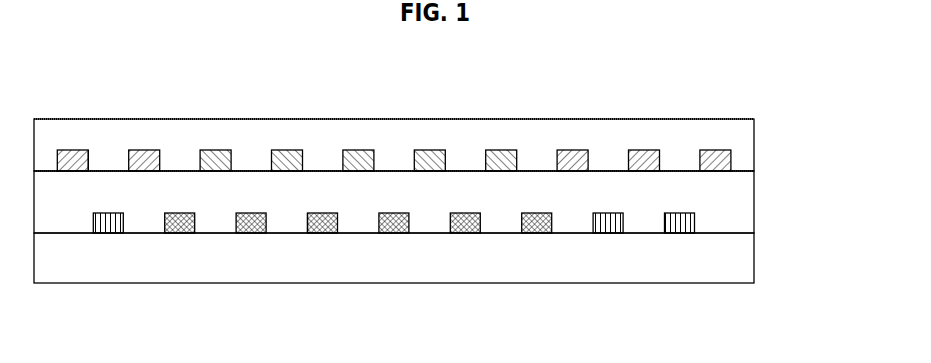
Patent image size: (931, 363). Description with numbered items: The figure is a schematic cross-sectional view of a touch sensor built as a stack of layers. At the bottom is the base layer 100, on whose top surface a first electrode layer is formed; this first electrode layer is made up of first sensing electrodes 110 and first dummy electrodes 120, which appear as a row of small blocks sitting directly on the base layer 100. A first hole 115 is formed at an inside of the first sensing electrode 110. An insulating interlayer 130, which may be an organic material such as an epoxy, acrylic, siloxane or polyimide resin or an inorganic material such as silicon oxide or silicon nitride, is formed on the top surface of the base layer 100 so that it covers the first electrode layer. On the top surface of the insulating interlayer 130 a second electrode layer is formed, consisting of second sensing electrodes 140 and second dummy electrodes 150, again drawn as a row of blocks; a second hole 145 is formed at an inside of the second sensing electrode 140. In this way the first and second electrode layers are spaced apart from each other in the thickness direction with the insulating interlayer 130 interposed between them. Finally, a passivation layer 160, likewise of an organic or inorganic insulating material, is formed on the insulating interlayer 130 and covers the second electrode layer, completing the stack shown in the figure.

The base layer 100 is at (747, 256).
The first sensing electrode 110 is at (170, 228).
The first hole 115 is at (306, 228).
The first dummy electrode 120 is at (103, 227).
The insulating interlayer 130 is at (747, 199).
The second sensing electrode 140 is at (80, 150).
The second hole 145 is at (91, 155).
The second dummy electrode 150 is at (222, 150).
The passivation layer 160 is at (747, 143).